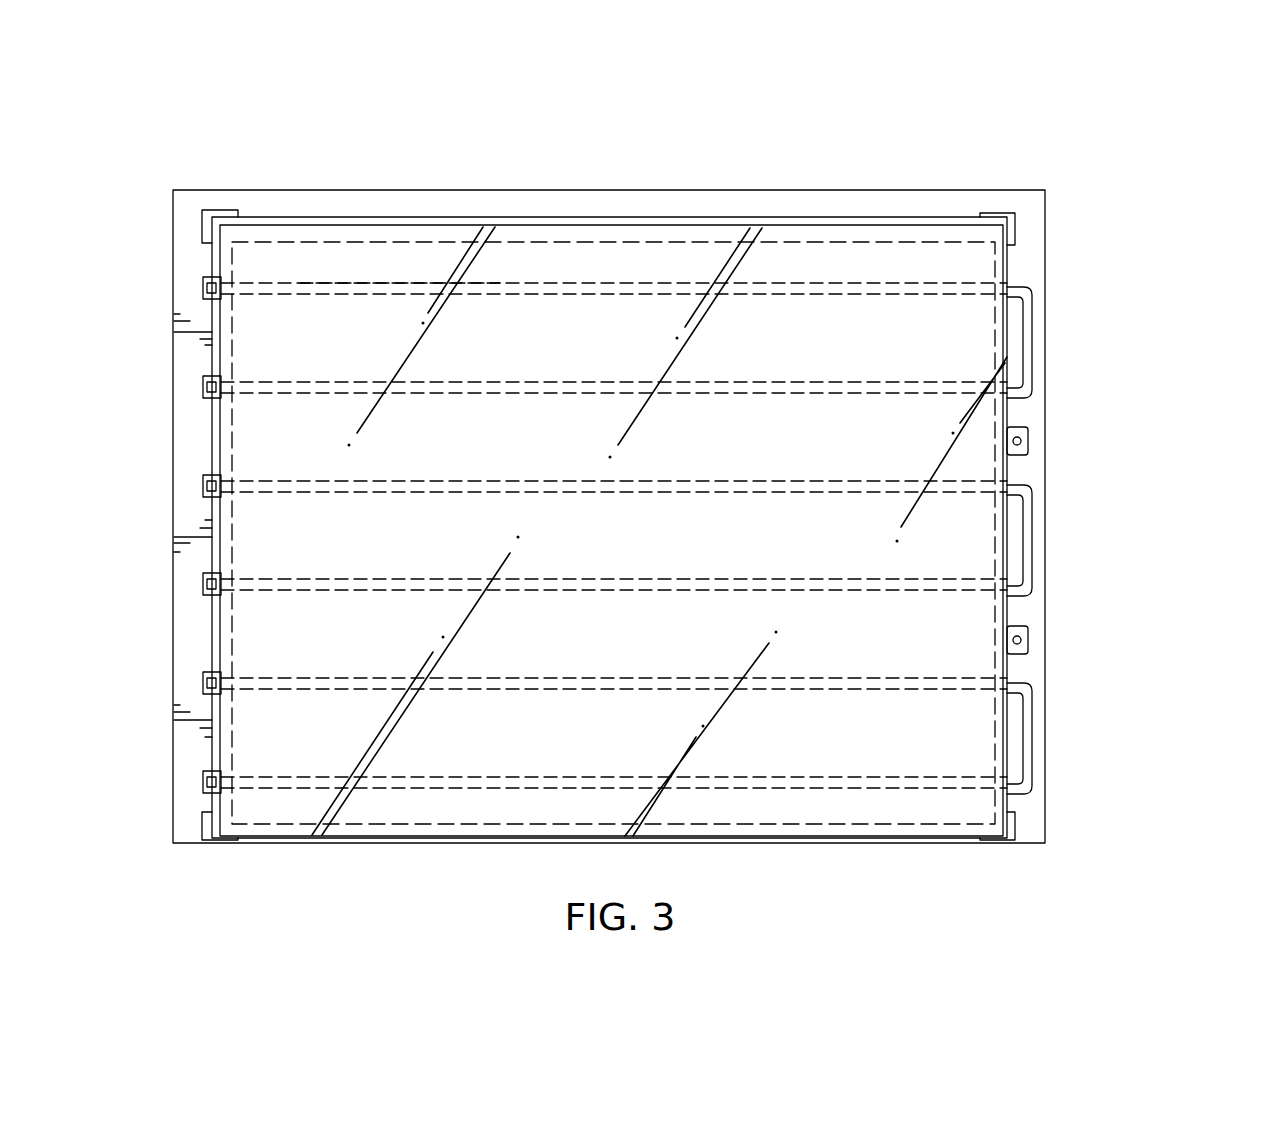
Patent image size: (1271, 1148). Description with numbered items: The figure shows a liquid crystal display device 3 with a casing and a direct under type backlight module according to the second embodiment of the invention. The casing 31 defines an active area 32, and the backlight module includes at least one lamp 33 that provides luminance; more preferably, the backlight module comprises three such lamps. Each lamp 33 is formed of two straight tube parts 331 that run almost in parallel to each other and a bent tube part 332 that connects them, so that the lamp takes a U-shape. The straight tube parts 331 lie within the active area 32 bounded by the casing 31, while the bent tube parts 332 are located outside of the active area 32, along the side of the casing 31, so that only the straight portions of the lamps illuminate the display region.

The liquid crystal display device 3 is at (160, 162).
The casing 31 is at (1022, 270).
The active area 32 is at (786, 257).
The lamp 33 is at (537, 285).
The straight tube part 331 is at (400, 285).
The bent tube part 332 is at (1025, 542).